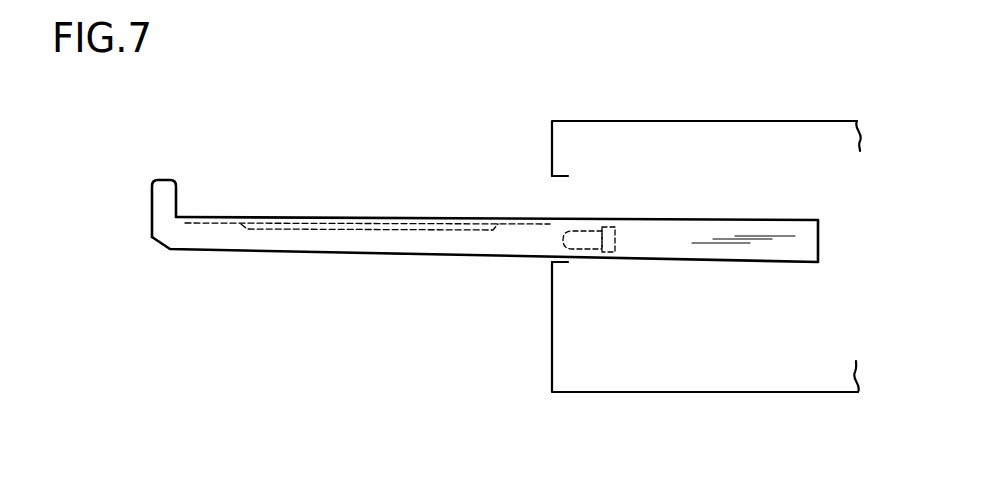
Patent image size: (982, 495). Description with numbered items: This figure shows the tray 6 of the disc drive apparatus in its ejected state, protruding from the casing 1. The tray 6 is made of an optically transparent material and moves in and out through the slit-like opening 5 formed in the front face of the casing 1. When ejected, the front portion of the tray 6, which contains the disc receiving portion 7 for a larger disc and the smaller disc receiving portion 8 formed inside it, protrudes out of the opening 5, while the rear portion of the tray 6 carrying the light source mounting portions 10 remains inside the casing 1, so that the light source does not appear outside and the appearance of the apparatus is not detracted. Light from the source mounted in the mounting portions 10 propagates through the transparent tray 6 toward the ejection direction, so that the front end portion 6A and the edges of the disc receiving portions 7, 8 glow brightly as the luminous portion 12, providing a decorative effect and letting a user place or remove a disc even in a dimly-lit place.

The casing 1 is at (713, 120).
The opening 5 is at (538, 187).
The tray 6 is at (429, 243).
The front end portion 6A is at (108, 190).
The luminous portion 12 is at (141, 194).
The disc receiving portion 7 is at (318, 217).
The disc receiving portion 8 is at (364, 222).
The light source mounting portion 10 is at (600, 197).